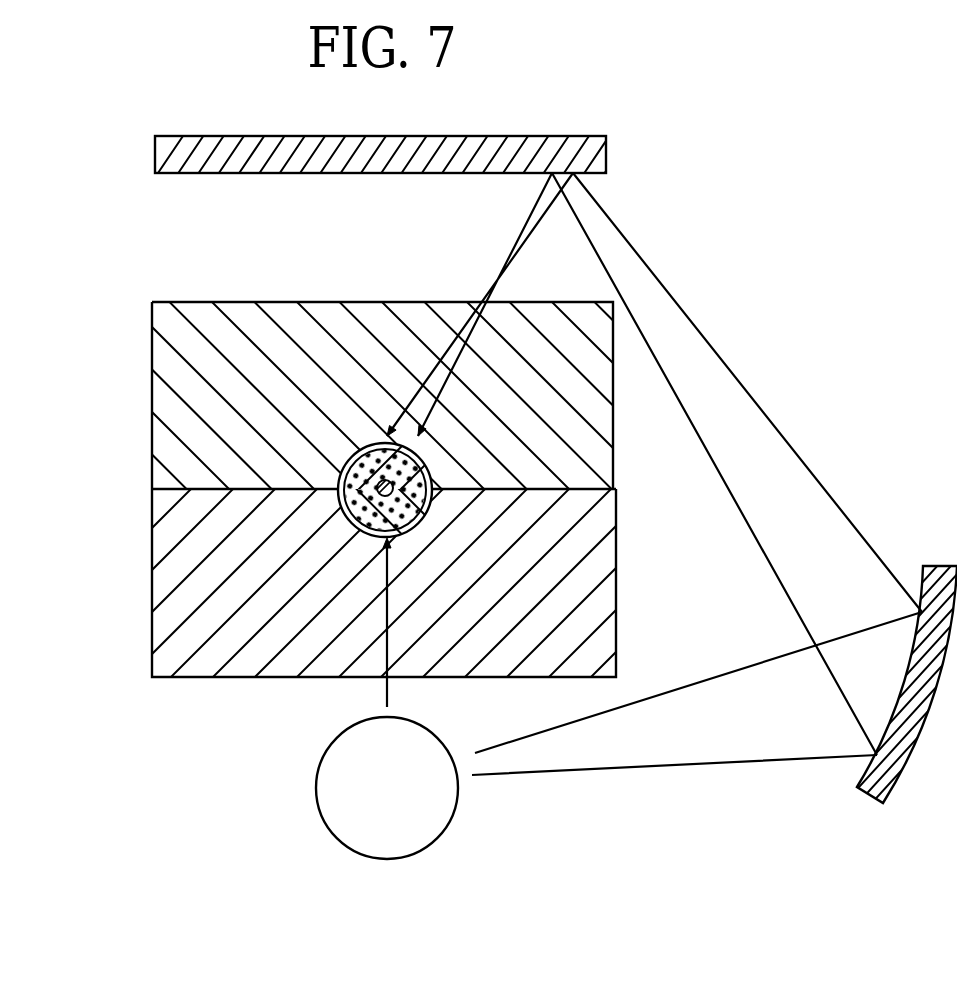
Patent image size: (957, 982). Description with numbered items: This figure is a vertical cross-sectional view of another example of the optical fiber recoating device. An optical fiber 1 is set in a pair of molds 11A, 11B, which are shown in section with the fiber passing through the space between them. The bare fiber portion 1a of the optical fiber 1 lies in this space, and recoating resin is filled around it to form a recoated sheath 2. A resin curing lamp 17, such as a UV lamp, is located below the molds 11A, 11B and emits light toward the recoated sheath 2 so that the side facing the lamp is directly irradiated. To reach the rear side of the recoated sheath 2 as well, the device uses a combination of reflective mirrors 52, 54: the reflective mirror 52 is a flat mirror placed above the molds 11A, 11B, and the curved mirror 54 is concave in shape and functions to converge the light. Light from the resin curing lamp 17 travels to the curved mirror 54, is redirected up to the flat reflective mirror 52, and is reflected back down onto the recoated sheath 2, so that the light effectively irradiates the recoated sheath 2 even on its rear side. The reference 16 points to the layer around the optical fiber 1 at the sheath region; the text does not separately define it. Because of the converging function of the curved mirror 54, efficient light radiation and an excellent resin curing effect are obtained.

The optical fiber 1 is at (340, 509).
The bare fiber portion 1a is at (380, 478).
The recoated sheath 2 is at (343, 471).
The mold 11A is at (152, 592).
The mold 11B is at (152, 412).
The coating of optical fiber 16 is at (360, 452).
The resin curing lamp 17 is at (328, 818).
The reflective mirror 52 is at (607, 148).
The curved mirror 54 is at (938, 566).